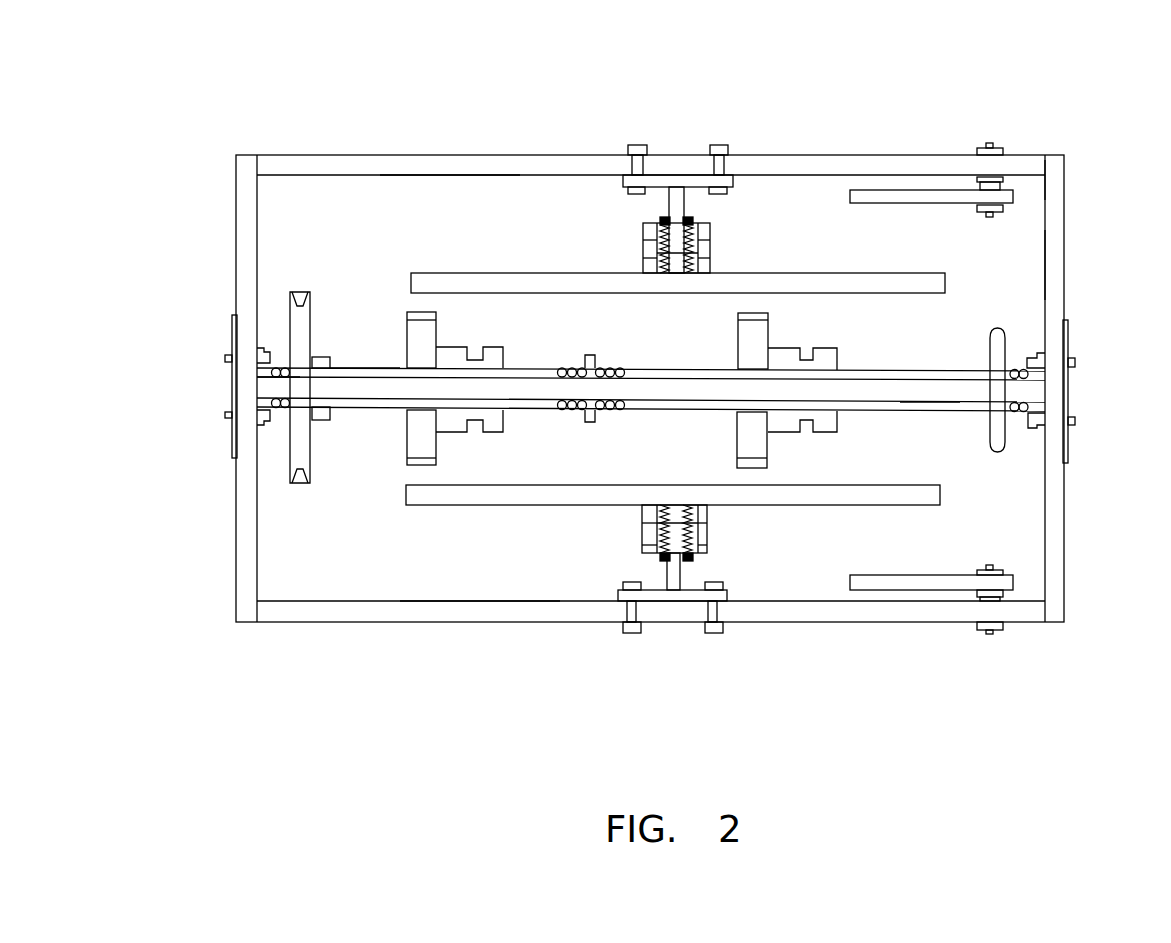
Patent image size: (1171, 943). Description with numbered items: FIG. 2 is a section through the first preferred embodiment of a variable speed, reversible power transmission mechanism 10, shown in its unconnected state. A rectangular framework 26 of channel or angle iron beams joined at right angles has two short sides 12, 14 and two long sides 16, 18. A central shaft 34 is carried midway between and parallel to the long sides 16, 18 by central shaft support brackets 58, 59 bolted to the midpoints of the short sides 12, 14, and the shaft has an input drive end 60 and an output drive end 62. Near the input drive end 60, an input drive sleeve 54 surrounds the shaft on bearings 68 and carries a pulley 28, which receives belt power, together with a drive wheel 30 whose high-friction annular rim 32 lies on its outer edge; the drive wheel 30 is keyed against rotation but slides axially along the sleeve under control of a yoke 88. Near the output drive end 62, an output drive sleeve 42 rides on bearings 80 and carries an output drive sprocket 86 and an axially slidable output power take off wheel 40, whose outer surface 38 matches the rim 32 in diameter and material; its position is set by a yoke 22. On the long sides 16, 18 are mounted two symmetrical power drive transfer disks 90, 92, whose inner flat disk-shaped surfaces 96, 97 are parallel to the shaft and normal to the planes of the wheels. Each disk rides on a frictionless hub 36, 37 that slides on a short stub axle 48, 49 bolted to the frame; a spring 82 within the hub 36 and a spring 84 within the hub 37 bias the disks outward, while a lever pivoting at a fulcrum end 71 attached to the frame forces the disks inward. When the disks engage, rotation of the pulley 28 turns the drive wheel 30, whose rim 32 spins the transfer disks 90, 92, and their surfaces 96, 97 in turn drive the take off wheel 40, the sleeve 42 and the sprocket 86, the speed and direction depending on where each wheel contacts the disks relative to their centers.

The variable speed, reversible power transmission mechanism 10 is at (664, 120).
The short side of framework 12 is at (245, 523).
The short side of framework 14 is at (1058, 282).
The long side of framework 16 is at (467, 607).
The long side of framework 18 is at (428, 163).
The yoke 22 is at (808, 427).
The rectangular framework 26 is at (1058, 178).
The pulley 28 is at (300, 452).
The drive wheel 30 is at (422, 450).
The drive wheel rim 32 is at (423, 340).
The central shaft 34 is at (1027, 385).
The hub 36 is at (707, 543).
The hub 37 is at (712, 240).
The outer surface of take off wheel 38 is at (767, 347).
The output power take off wheel 40 is at (752, 440).
The output drive sleeve 42 is at (930, 405).
The transfer disk axle 48 is at (672, 577).
The transfer disk axle 49 is at (674, 183).
The input drive sleeve 54 is at (363, 367).
The central shaft support bracket 58 is at (262, 405).
The central shaft support bracket 59 is at (1040, 372).
The input drive end 60 is at (255, 390).
The output drive end 62 is at (1045, 398).
The bearings 68 is at (268, 369).
The fulcrum end 71 is at (945, 195).
The bearings 80 is at (1020, 370).
The spring 82 is at (660, 537).
The spring 84 is at (667, 243).
The output drive sprocket 86 is at (1000, 427).
The yoke 88 is at (443, 422).
The power drive transfer disk 90 is at (540, 495).
The power drive transfer disk 92 is at (583, 278).
The inner flat disk-shaped surface 96 is at (512, 467).
The inner flat disk-shaped surface 97 is at (512, 315).